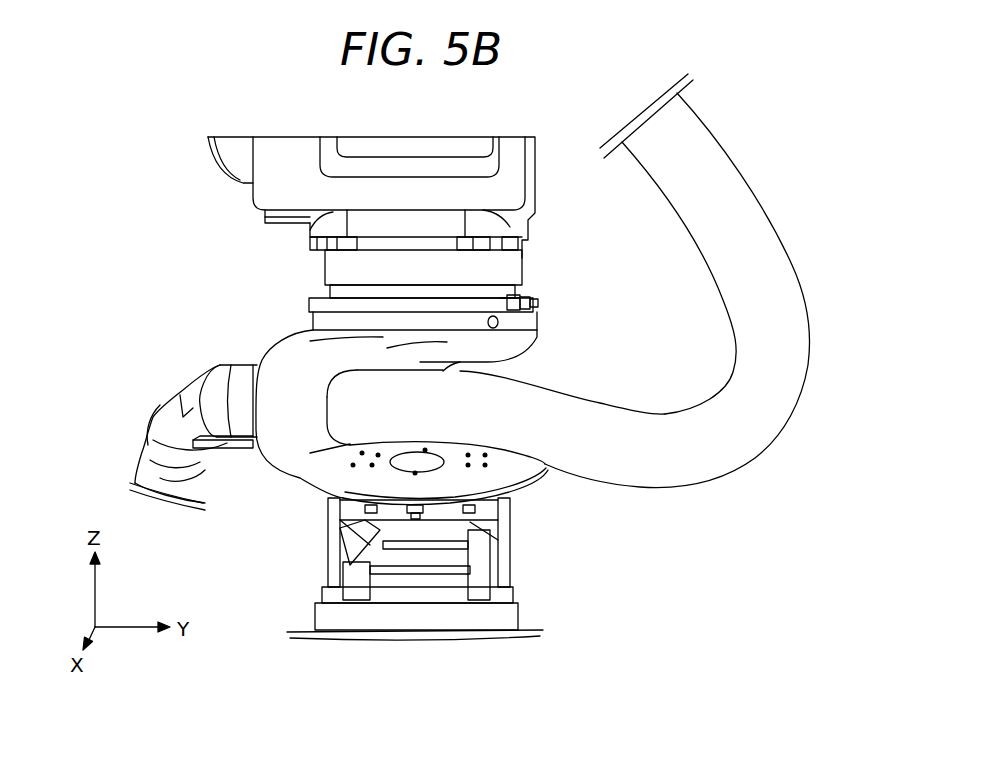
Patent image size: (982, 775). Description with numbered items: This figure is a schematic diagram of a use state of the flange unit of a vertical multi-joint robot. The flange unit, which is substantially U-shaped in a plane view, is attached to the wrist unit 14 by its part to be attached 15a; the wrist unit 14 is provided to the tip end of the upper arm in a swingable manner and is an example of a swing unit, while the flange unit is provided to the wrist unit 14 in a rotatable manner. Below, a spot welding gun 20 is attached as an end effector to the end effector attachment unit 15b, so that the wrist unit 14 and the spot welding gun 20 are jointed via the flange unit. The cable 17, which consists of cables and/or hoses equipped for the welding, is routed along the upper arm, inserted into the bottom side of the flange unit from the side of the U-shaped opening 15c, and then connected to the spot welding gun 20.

The wrist unit 14 is at (530, 173).
The part to be attached 15a is at (538, 322).
The end effector attachment unit 15b is at (302, 509).
The opening 15c is at (539, 363).
The cable 17 is at (748, 228).
The spot welding gun 20 is at (533, 535).